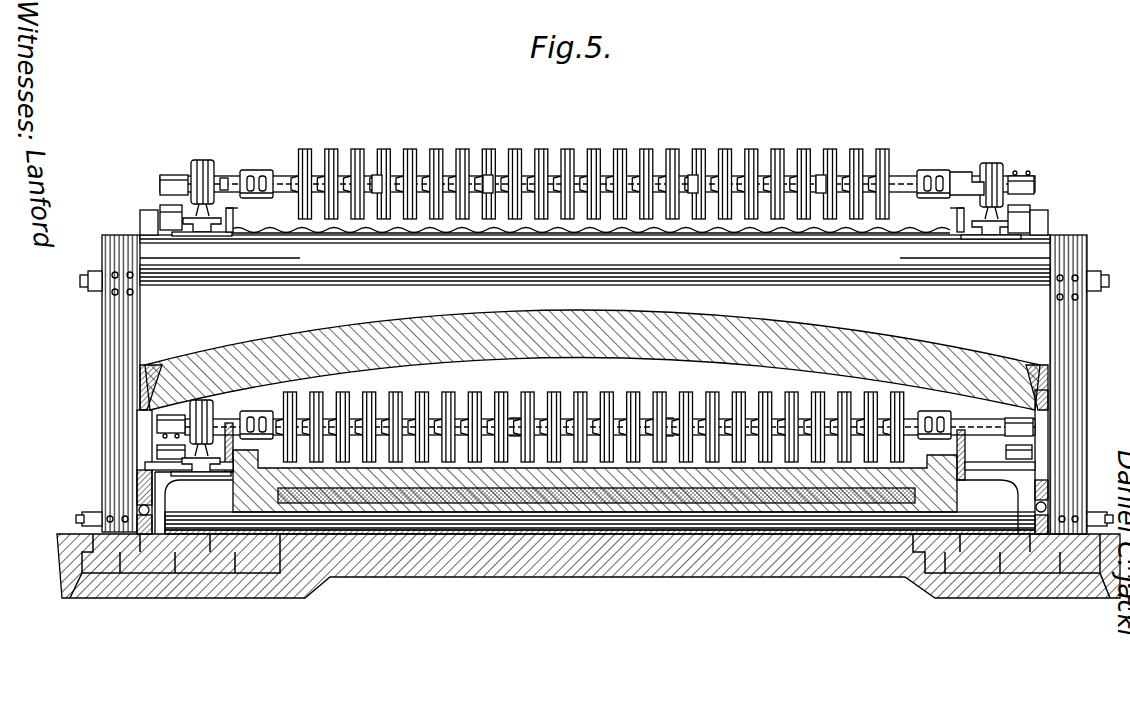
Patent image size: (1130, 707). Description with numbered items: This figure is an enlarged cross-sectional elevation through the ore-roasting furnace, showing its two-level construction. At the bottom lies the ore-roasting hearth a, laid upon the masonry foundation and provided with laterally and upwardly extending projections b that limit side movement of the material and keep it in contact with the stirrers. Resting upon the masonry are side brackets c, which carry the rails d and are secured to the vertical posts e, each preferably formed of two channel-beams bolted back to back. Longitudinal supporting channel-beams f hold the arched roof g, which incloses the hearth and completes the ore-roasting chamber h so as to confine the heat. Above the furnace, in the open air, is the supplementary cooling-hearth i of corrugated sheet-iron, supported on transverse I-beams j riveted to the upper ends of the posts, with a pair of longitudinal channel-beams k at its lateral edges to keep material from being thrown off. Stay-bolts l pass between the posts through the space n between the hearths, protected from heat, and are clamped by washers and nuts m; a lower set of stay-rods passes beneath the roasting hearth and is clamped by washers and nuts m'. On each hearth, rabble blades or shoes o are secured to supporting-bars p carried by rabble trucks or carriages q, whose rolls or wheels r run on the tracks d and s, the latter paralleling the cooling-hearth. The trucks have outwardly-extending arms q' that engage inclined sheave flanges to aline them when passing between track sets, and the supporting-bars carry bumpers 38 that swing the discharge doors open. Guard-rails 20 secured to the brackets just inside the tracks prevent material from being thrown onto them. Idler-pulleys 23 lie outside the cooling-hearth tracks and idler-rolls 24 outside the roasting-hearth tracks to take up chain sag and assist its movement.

The bumpers 38 is at (377, 178).
The idler-pulleys 23 is at (150, 210).
The guard-rails 20 is at (252, 414).
The idler-rolls 24 is at (1048, 478).
The ore-roasting hearth a is at (630, 508).
The laterally and upwardly extending projections b is at (590, 467).
The side brackets c is at (1000, 480).
The rails d is at (200, 456).
The vertical posts e is at (102, 372).
The longitudinal supporting channel-beams f is at (150, 365).
The arched roof g is at (770, 318).
The ore-roasting chamber h is at (385, 382).
The cooling-hearth i is at (268, 234).
The I-beams j is at (598, 250).
The channel-beams k is at (238, 212).
The stay-bolts l is at (392, 285).
The washers and nuts m is at (581, 270).
The washers and nuts m' is at (592, 502).
The space n is at (585, 302).
The rabble blades or shoes o is at (417, 150).
The supporting-bars p is at (258, 170).
The rabble trucks or carriages q is at (572, 164).
The outwardly-extending arms q' is at (636, 292).
The rolls or wheels r is at (204, 160).
The tracks s is at (226, 178).